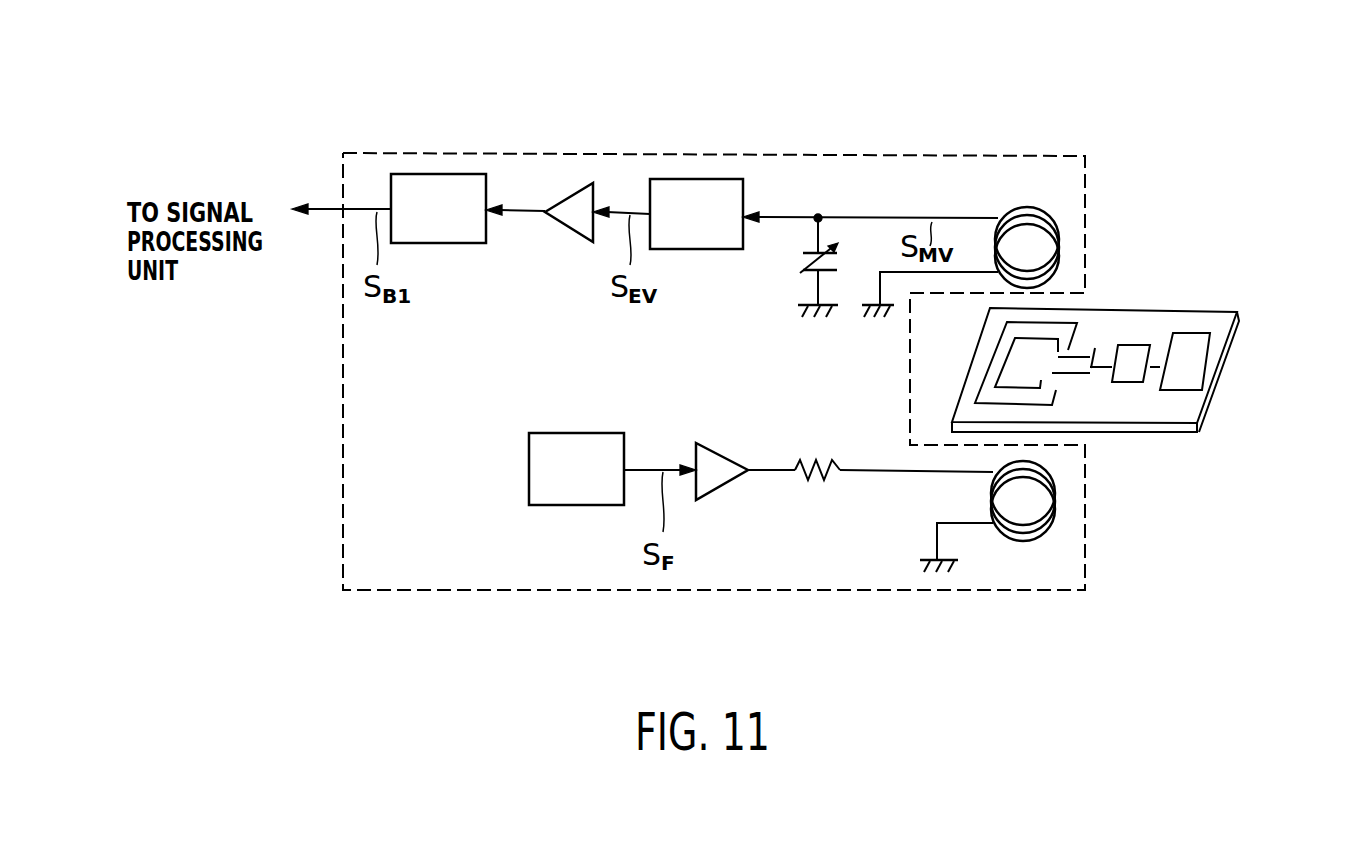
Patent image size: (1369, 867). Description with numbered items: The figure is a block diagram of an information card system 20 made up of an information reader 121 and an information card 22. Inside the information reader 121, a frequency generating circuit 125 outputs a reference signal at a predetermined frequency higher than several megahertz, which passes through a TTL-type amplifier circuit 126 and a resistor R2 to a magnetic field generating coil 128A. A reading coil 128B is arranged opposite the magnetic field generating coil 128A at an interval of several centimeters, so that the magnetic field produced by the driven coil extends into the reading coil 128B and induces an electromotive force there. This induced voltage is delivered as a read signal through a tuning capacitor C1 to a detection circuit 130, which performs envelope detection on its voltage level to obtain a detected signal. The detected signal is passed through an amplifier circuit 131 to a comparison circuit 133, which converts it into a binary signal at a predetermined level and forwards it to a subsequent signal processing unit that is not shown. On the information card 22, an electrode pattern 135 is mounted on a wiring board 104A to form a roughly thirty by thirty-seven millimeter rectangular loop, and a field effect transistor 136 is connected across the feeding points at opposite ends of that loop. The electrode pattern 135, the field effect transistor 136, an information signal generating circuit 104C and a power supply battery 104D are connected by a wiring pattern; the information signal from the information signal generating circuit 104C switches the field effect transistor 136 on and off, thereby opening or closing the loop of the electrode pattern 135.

The information card system 20 is at (447, 35).
The information card 22 is at (1250, 466).
The information reader 121 is at (1087, 160).
The frequency generating circuit 125 is at (576, 441).
The amplifier circuit 126 is at (710, 443).
The magnetic field generating coil 128A is at (1028, 540).
The reading coil 128B is at (998, 216).
The detection circuit 130 is at (716, 250).
The amplifier circuit 131 is at (570, 234).
The comparison circuit 133 is at (470, 244).
The electrode pattern 135 is at (1057, 393).
The field effect transistor 136 is at (1078, 350).
The wiring board 104A is at (1225, 375).
The information signal generating circuit 104C is at (1138, 350).
The power supply battery 104D is at (1195, 357).
The tuning capacitor C1 is at (807, 268).
The resistor R2 is at (812, 462).